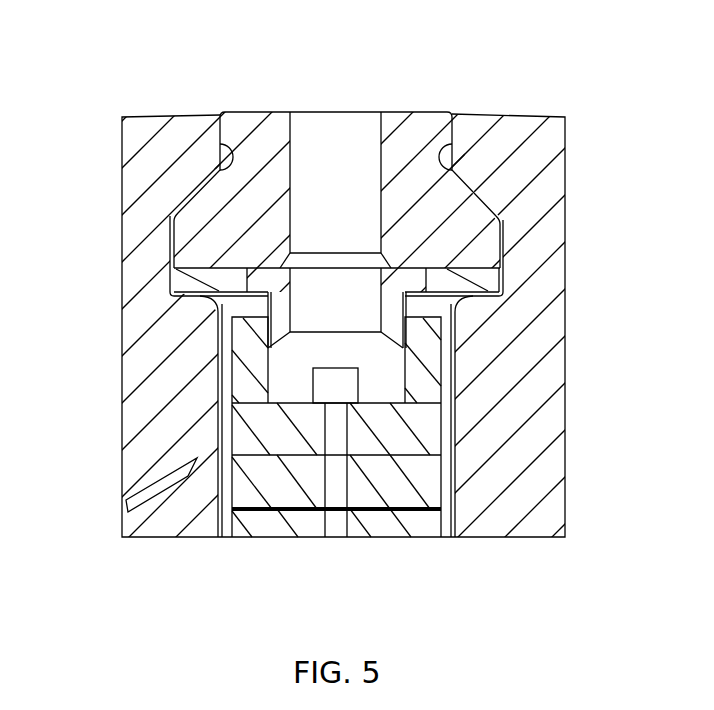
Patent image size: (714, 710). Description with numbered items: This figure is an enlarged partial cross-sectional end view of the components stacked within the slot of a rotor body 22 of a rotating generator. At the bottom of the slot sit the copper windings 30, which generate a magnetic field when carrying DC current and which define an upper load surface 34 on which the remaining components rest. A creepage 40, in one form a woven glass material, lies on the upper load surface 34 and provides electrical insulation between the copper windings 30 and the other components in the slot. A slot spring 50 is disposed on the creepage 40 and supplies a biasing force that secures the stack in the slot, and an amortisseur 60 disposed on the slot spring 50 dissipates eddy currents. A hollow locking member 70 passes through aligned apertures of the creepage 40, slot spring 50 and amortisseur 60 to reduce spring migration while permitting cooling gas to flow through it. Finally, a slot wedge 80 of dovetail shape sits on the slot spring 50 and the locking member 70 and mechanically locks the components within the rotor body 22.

The rotor body 22 is at (553, 105).
The slot wedge 80 is at (404, 101).
The amortisseur 60 is at (517, 281).
The slot spring 50 is at (483, 296).
The hollow locking member 70 is at (278, 302).
The creepage 40 is at (219, 372).
The upper load surface 34 is at (412, 403).
The copper windings 30 is at (458, 437).